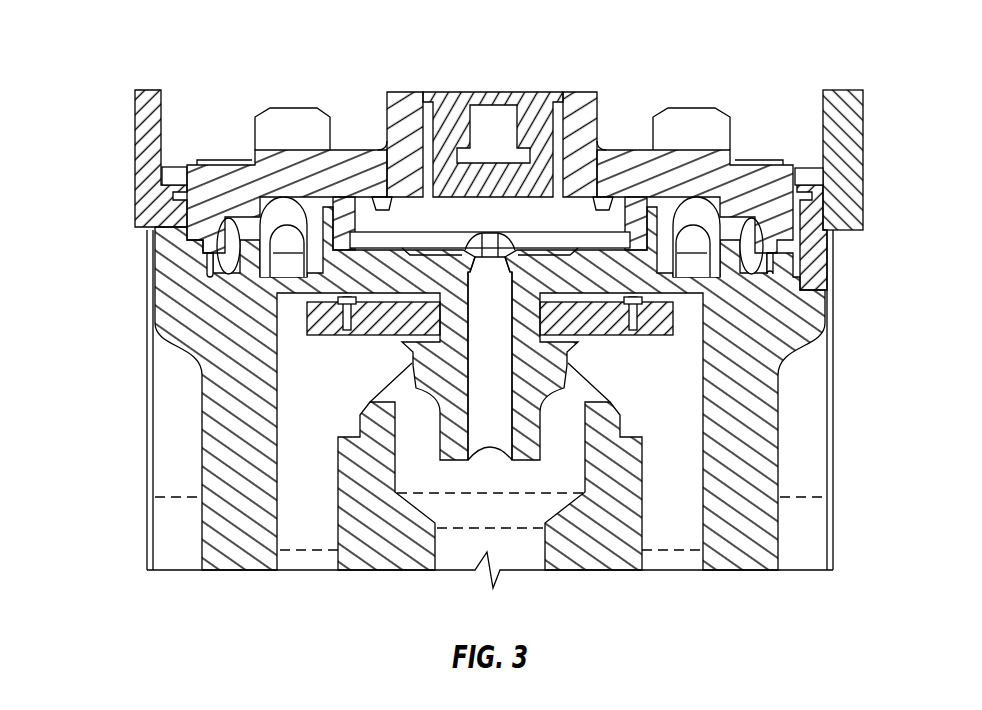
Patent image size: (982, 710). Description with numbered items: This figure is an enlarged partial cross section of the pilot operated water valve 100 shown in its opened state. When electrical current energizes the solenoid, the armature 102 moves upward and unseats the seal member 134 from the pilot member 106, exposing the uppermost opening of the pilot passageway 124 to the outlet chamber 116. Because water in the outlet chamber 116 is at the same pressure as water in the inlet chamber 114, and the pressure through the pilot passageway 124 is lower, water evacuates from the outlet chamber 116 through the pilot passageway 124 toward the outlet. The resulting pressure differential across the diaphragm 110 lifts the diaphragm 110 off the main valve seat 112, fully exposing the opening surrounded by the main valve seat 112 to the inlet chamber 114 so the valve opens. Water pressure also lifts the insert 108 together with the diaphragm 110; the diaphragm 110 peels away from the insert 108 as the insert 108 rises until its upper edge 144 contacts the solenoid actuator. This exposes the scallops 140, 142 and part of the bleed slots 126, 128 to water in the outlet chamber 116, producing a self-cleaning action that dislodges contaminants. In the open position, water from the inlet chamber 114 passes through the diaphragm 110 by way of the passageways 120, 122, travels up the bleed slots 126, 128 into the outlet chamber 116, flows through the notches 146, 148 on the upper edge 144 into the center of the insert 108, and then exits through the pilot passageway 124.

The water valve 100 is at (45, 402).
The armature 102 is at (490, 100).
The pilot member 106 is at (478, 238).
The insert 108 is at (345, 277).
The diaphragm 110 is at (707, 285).
The main valve seat 112 is at (597, 410).
The inlet chamber 114 is at (667, 537).
The outlet chamber 116 is at (740, 175).
The passageway 120 is at (355, 318).
The passageway 122 is at (655, 318).
The pilot passageway 124 is at (490, 270).
The bleed slot 126 is at (283, 240).
The bleed slot 128 is at (760, 233).
The seal member 134 is at (533, 120).
The scallop 140 is at (312, 215).
The scallop 142 is at (665, 233).
The upper edge 144 is at (700, 212).
The notch 146 is at (380, 200).
The notch 148 is at (603, 200).